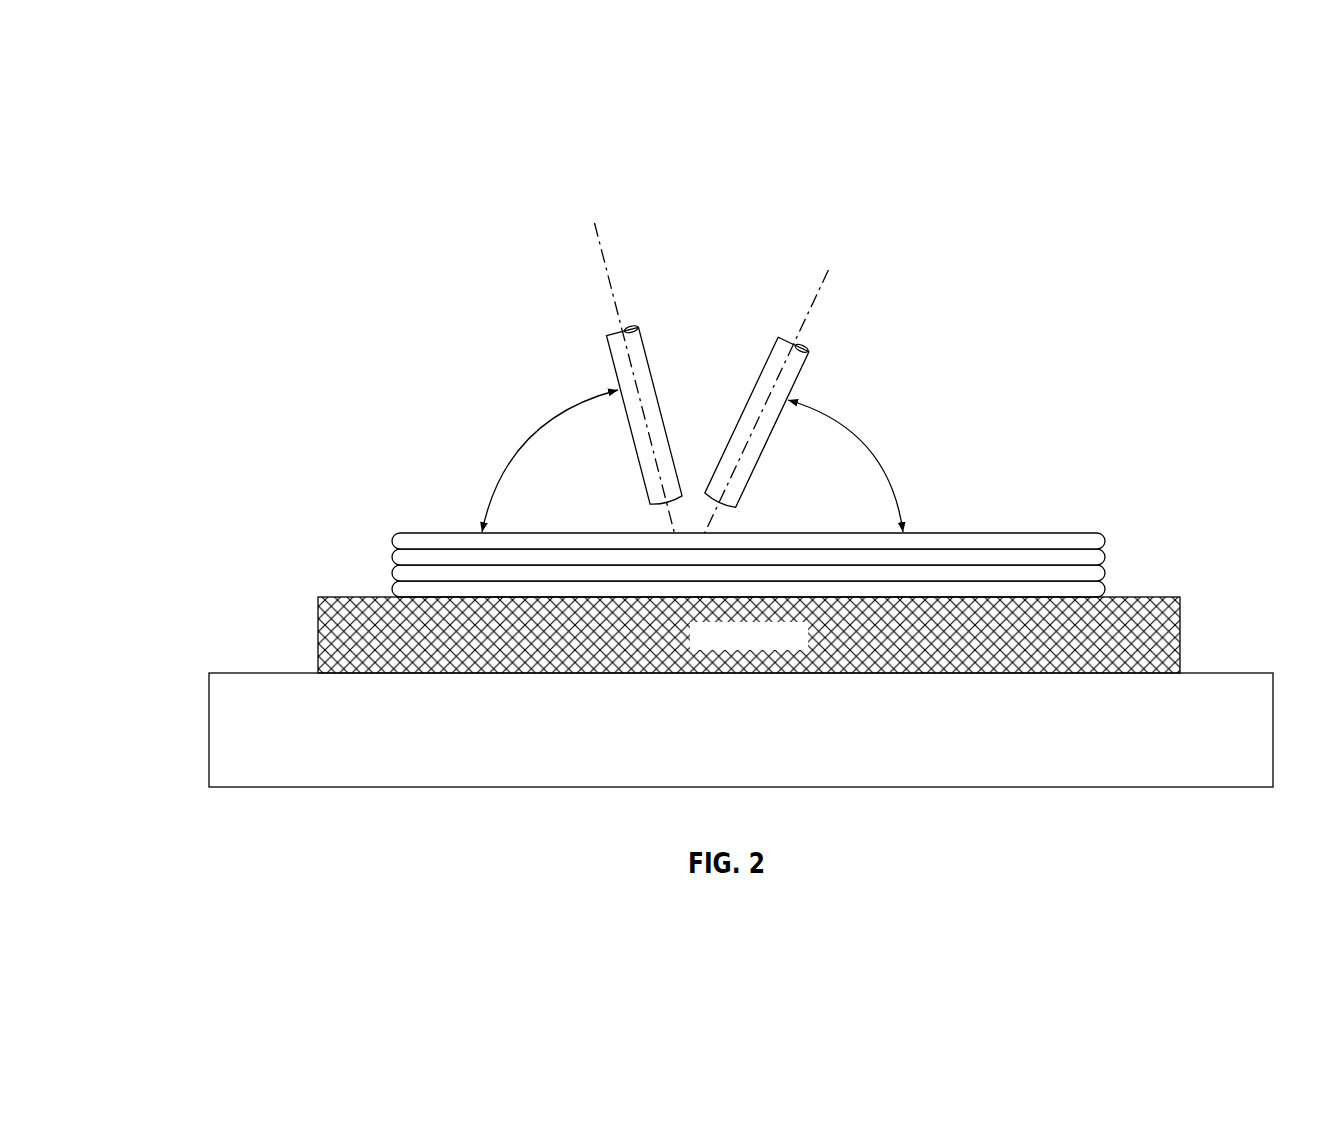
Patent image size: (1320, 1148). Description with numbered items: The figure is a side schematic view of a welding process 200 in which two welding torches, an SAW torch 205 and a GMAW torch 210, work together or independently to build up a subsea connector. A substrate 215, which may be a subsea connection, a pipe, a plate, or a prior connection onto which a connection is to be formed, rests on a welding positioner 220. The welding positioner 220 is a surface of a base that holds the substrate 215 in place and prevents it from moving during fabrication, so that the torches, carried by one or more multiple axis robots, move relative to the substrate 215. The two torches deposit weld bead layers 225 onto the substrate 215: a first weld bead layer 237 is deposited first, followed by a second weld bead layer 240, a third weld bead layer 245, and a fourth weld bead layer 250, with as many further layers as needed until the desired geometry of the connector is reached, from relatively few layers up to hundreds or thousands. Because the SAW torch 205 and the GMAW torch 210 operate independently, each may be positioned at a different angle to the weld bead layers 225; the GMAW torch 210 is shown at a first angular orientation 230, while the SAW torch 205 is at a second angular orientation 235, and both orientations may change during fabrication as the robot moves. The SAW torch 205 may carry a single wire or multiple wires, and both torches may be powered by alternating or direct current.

The welding process 200 is at (535, 153).
The SAW torch 205 is at (613, 333).
The GMAW torch 210 is at (799, 345).
The substrate 215 is at (318, 650).
The welding positioner 220 is at (208, 735).
The weld bead layers 225 is at (685, 529).
The first angular orientation 230 is at (865, 450).
The second angular orientation 235 is at (528, 448).
The first weld bead layer 237 is at (1107, 588).
The second weld bead layer 240 is at (1107, 572).
The third weld bead layer 245 is at (1107, 556).
The fourth weld bead layer 250 is at (1107, 540).